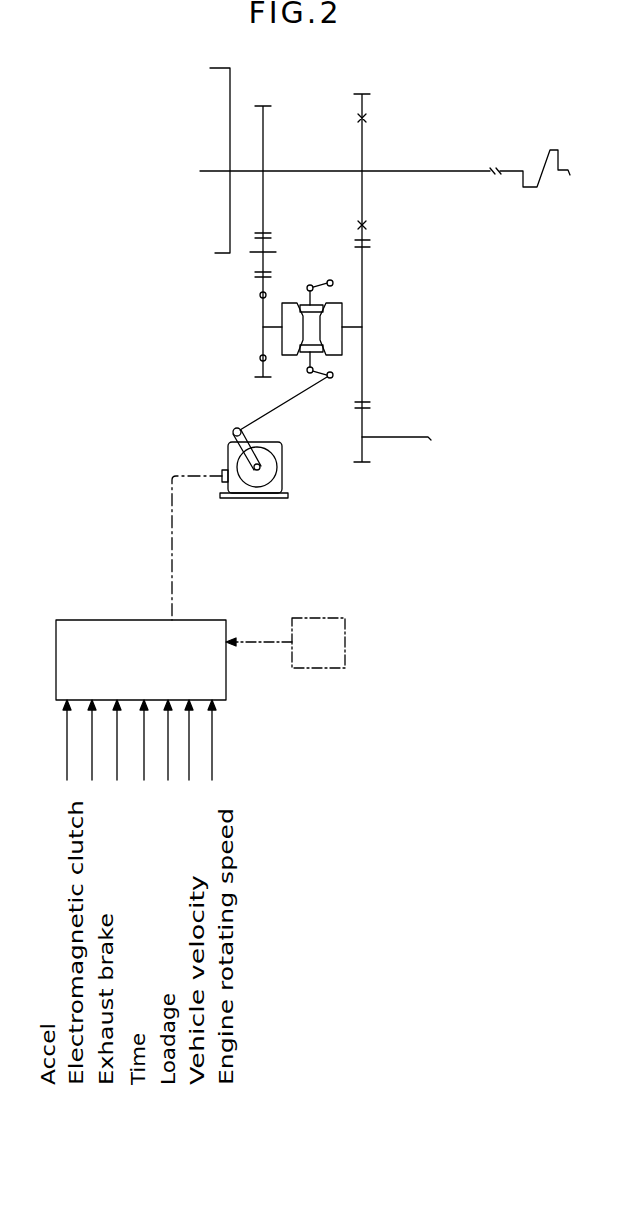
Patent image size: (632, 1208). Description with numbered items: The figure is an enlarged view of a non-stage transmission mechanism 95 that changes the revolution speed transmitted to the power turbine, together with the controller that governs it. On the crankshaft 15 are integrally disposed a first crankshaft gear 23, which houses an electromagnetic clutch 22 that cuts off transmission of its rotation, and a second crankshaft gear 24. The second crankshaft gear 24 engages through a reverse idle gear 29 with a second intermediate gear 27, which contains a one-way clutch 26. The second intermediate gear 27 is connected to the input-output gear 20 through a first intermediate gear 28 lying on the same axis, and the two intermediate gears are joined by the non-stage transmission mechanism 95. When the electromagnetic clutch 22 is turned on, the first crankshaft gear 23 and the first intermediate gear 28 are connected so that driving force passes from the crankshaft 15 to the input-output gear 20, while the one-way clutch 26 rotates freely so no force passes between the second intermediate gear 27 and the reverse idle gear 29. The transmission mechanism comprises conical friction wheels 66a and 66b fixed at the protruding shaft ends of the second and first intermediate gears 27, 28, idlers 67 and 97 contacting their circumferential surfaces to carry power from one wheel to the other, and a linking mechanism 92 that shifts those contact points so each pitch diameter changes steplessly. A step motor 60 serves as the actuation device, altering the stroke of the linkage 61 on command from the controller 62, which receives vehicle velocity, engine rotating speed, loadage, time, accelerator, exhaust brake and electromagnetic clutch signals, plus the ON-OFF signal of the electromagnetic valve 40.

The crankshaft 15 is at (466, 172).
The input-output gear 20 is at (364, 418).
The electromagnetic clutch 22 is at (364, 118).
The first crankshaft gear 23 is at (364, 140).
The second crankshaft gear 24 is at (263, 122).
The one-way clutch 26 is at (259, 296).
The second intermediate gear 27 is at (262, 336).
The first intermediate gear 28 is at (364, 366).
The reverse idle gear 29 is at (252, 253).
The electromagnetic valve 40 is at (333, 655).
The step motor 60 is at (275, 466).
The linkage 61 is at (282, 410).
The controller 62 is at (151, 672).
The conical friction wheel 66a is at (294, 303).
The conical friction wheel 66b is at (344, 318).
The idler 67 is at (335, 303).
The linking mechanism 92 is at (248, 410).
The non-stage transmission mechanism 95 is at (314, 268).
The idler 97 is at (343, 386).